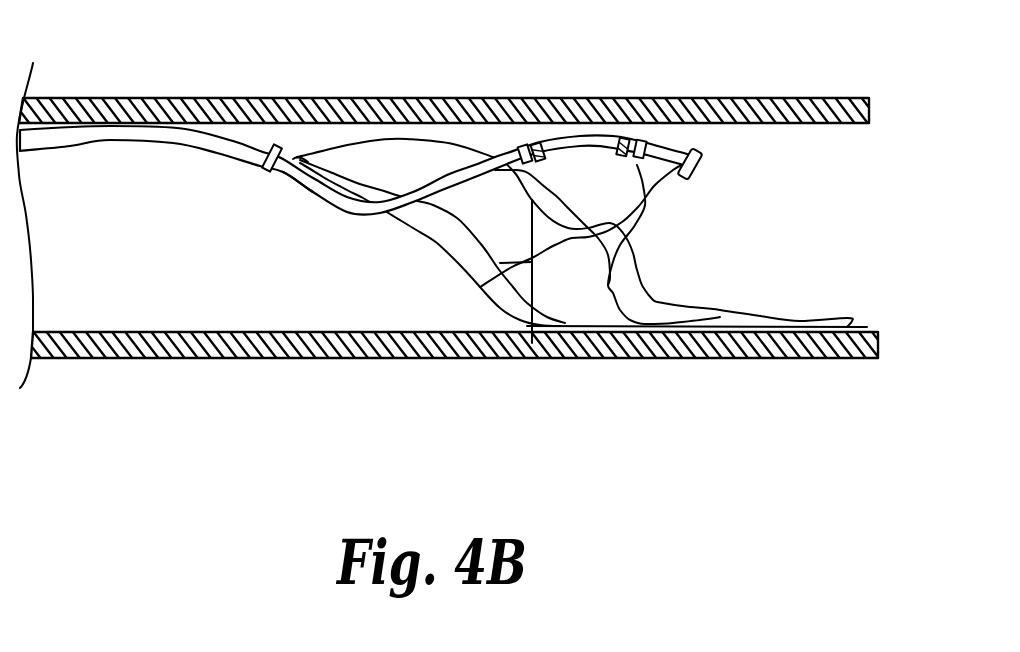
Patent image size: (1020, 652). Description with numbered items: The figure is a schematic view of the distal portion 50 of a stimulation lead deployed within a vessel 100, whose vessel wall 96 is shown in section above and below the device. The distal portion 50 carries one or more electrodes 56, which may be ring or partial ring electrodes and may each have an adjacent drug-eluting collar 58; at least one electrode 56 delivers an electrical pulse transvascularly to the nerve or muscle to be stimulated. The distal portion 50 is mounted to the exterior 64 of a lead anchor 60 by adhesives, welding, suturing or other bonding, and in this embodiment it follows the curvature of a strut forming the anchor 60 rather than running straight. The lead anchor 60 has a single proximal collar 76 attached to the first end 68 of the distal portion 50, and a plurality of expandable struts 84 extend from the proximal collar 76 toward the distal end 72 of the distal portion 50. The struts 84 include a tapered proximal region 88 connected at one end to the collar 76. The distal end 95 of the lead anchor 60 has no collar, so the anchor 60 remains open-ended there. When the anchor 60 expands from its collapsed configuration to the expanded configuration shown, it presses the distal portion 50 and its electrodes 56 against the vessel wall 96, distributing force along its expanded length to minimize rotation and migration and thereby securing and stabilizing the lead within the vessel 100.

The vessel 100 is at (175, 97).
The vessel wall 96 is at (872, 328).
The distal portion 50 is at (172, 144).
The lead anchor 60 is at (428, 259).
The exterior 64 is at (450, 139).
The first end 68 is at (297, 157).
The electrodes 56 is at (625, 139).
The drug-eluting collar 58 is at (639, 141).
The distal end 72 is at (688, 149).
The proximal collar 76 is at (268, 164).
The expandable struts 84 is at (532, 343).
The tapered proximal region 88 is at (313, 190).
The distal end of the lead anchor 95 is at (743, 328).